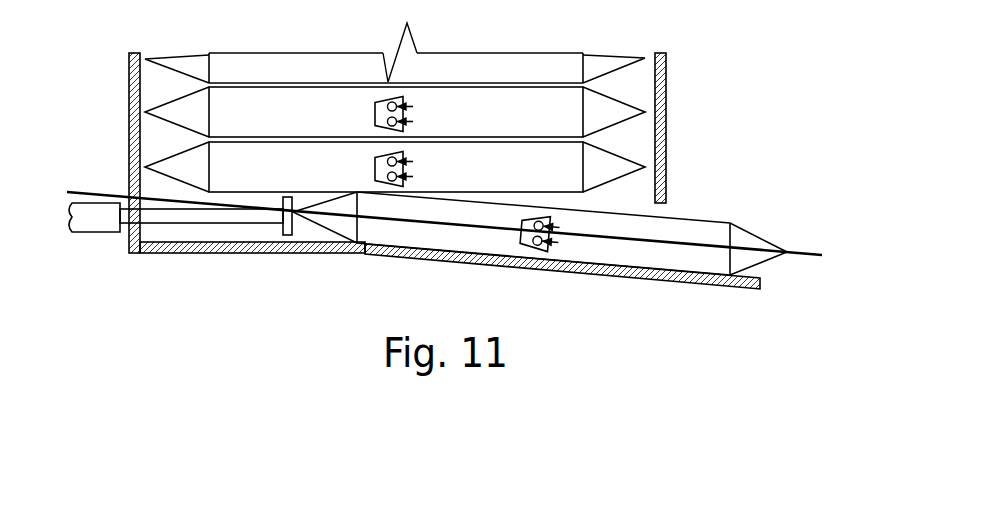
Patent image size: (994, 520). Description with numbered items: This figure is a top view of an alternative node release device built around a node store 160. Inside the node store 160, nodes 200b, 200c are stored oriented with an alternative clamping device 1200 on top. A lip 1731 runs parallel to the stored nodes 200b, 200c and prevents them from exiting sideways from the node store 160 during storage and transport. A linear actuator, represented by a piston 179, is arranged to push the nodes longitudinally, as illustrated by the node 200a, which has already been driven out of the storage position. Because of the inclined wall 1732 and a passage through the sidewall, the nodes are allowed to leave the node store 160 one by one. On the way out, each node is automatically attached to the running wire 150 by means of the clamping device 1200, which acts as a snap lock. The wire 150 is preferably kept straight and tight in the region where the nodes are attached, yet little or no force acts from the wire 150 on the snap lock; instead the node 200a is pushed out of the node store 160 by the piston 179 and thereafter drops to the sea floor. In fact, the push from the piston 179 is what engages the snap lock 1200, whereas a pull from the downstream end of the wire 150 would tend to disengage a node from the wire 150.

The node store 160 is at (680, 134).
The node 200c is at (293, 125).
The node 200b is at (293, 180).
The node 200a is at (698, 238).
The clamping device 1200 is at (414, 113).
The wire 150 is at (802, 250).
The piston 179 is at (98, 225).
The lip 1731 is at (232, 255).
The inclined wall 1732 is at (598, 278).